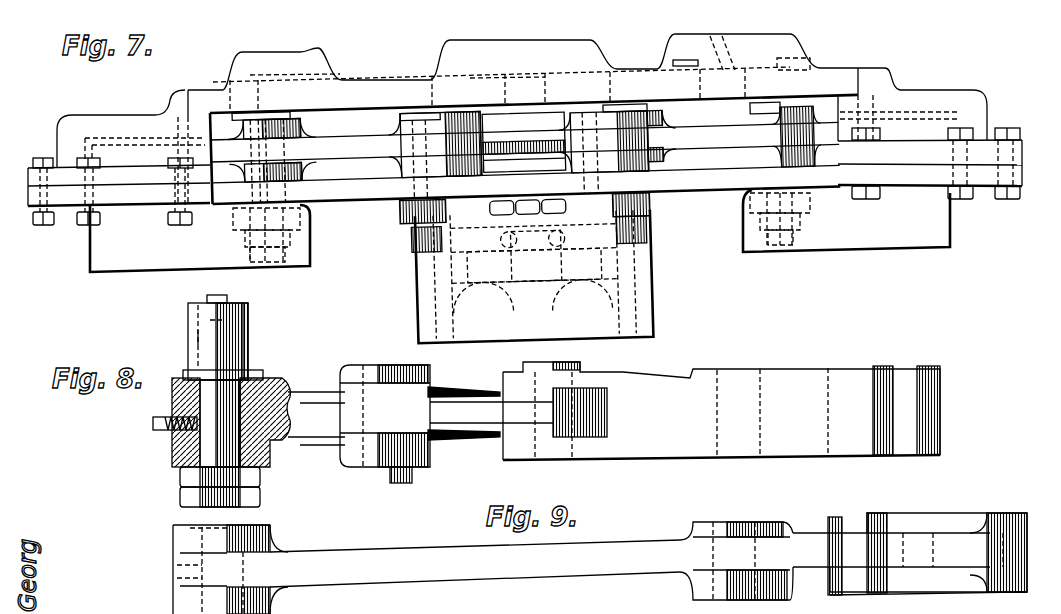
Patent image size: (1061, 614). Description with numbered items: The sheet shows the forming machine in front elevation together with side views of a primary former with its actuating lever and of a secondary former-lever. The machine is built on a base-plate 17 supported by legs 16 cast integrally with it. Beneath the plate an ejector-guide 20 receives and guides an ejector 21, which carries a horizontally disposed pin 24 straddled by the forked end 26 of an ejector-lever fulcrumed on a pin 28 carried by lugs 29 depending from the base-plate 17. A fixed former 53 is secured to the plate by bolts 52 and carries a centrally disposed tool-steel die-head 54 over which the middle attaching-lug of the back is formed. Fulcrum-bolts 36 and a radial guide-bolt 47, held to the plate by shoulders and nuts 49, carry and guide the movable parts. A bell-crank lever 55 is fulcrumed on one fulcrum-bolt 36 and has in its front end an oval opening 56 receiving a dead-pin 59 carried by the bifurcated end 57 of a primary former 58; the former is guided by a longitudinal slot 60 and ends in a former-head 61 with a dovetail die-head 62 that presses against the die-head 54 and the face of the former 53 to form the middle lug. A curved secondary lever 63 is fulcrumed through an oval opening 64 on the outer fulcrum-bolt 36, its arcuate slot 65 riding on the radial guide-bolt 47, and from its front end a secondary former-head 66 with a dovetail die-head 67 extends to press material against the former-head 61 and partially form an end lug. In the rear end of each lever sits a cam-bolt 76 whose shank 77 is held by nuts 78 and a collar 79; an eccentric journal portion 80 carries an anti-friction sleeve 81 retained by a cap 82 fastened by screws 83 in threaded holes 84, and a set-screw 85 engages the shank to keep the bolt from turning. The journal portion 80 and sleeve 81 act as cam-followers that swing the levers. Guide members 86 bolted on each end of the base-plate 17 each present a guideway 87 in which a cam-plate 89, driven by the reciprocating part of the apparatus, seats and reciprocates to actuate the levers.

In FIG. 7, the legs 16 is at (139, 272).
In FIG. 7, the base-plate 17 is at (143, 210).
In FIG. 7, the ejector-guide 20 is at (412, 282).
In FIG. 7, the ejector 21 is at (420, 318).
In FIG. 7, the pin 24 is at (425, 295).
In FIG. 7, the forked end 26 is at (505, 320).
In FIG. 7, the pin 28 is at (650, 280).
In FIG. 7, the lugs 29 is at (650, 306).
In FIG. 7, the fulcrum-bolts 36 is at (282, 122).
In FIG. 8, the fulcrum-bolts 36 is at (378, 370).
In FIG. 7, the radial guide-bolt 47 is at (413, 112).
In FIG. 7, the nuts 49 is at (652, 240).
In FIG. 7, the bolts 52 is at (555, 153).
In FIG. 7, the fixed former 53 is at (524, 164).
In FIG. 7, the die-head 54 is at (524, 142).
In FIG. 8, the bell-crank lever 55 is at (318, 430).
In FIG. 8, the opening 56 is at (607, 412).
In FIG. 8, the bifurcated end 57 is at (490, 392).
In FIG. 8, the primary former 58 is at (702, 378).
In FIG. 8, the dead-pin 59 is at (585, 365).
In FIG. 8, the slot 60 is at (770, 375).
In FIG. 8, the former-head 61 is at (875, 372).
In FIG. 8, the die-head 62 is at (938, 368).
In FIG. 7, the curved secondary lever 63 is at (352, 190).
In FIG. 9, the curved secondary lever 63 is at (632, 542).
In FIG. 9, the opening 64 is at (713, 530).
In FIG. 7, the slot 65 is at (664, 130).
In FIG. 9, the slot 65 is at (972, 512).
In FIG. 9, the secondary former-head 66 is at (880, 515).
In FIG. 9, the die-head 67 is at (832, 518).
In FIG. 8, the cam-bolt 76 is at (208, 395).
In FIG. 8, the shank 77 is at (207, 450).
In FIG. 8, the nuts 78 is at (182, 478).
In FIG. 8, the collar 79 is at (252, 370).
In FIG. 8, the journal portion 80 is at (196, 340).
In FIG. 8, the anti-friction sleeve 81 is at (245, 343).
In FIG. 8, the cap 82 is at (246, 305).
In FIG. 8, the screws 83 is at (207, 299).
In FIG. 8, the threaded holes 84 is at (212, 322).
In FIG. 8, the set-screw 85 is at (152, 423).
In FIG. 7, the guide members 86 is at (92, 122).
In FIG. 7, the guideway 87 is at (183, 100).
In FIG. 7, the cam-plate 89 is at (565, 85).